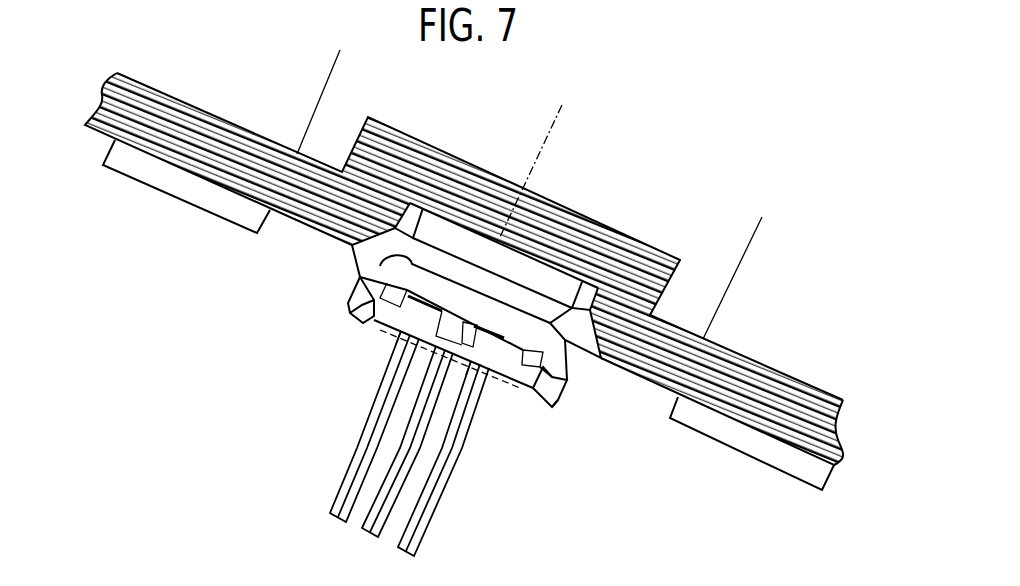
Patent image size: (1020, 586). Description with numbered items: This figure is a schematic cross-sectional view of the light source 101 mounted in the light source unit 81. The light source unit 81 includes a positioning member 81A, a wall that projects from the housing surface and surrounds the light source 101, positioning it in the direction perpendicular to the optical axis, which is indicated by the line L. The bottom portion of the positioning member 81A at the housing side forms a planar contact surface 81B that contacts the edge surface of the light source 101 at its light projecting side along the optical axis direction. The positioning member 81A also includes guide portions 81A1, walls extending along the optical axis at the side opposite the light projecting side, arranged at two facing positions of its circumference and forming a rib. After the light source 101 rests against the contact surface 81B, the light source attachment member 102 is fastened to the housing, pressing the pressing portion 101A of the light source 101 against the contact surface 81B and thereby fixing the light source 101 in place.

The light source unit 81 is at (276, 354).
The positioning member 81A is at (362, 334).
The guide portion 81A1 is at (366, 323).
The contact surface 81B is at (509, 340).
The light source 101 is at (440, 479).
The pressing portion 101A is at (507, 381).
The light source attachment member 102 is at (388, 331).
The line indicating the optical axis L is at (546, 133).